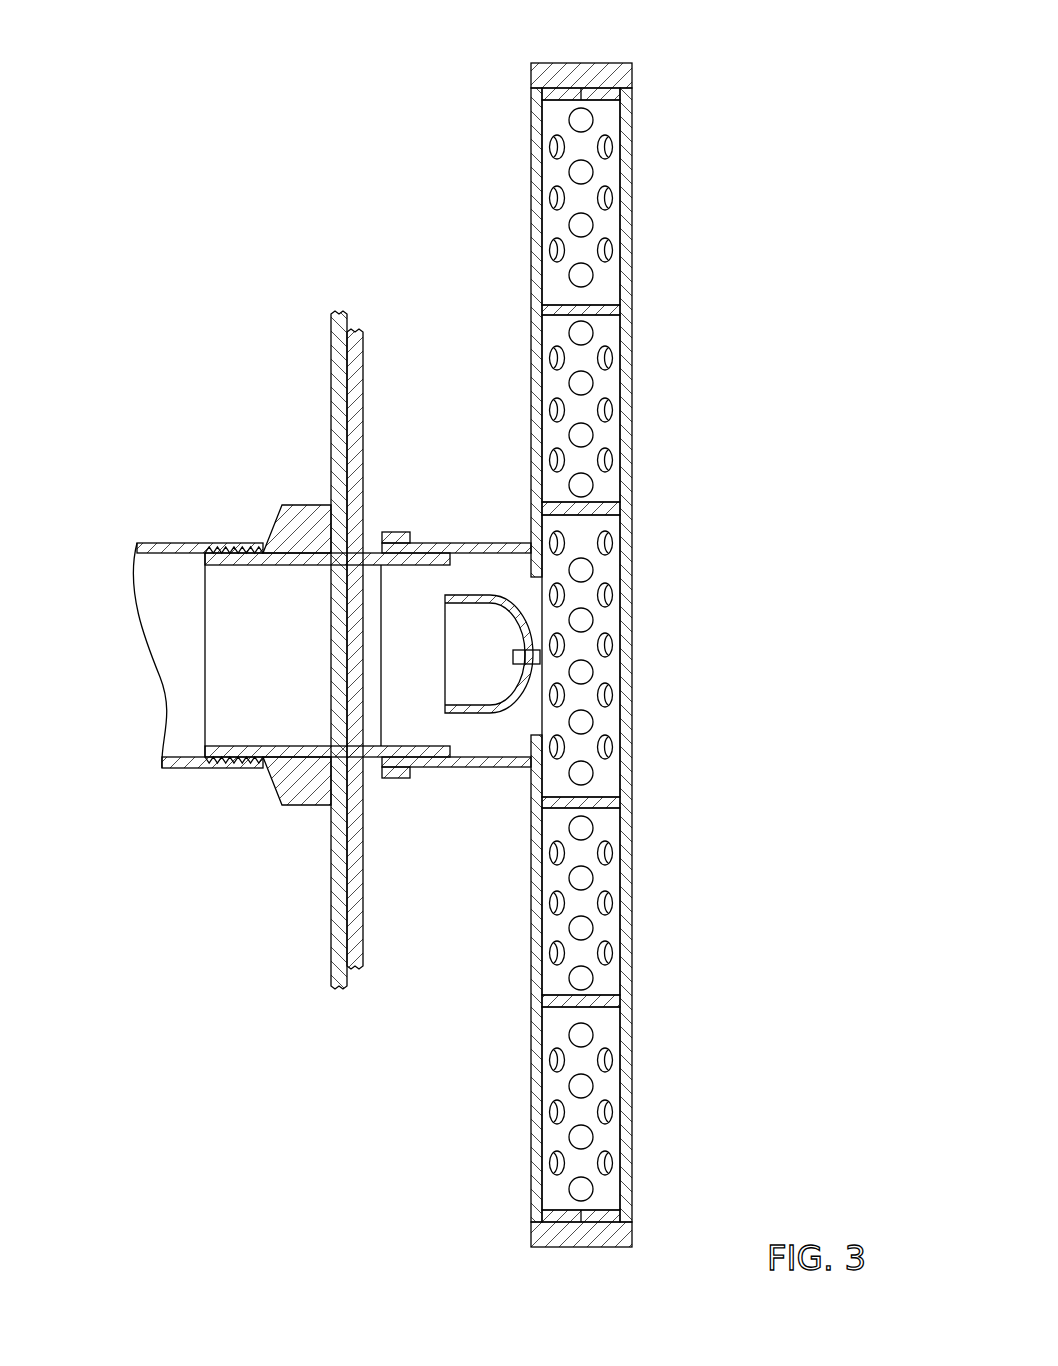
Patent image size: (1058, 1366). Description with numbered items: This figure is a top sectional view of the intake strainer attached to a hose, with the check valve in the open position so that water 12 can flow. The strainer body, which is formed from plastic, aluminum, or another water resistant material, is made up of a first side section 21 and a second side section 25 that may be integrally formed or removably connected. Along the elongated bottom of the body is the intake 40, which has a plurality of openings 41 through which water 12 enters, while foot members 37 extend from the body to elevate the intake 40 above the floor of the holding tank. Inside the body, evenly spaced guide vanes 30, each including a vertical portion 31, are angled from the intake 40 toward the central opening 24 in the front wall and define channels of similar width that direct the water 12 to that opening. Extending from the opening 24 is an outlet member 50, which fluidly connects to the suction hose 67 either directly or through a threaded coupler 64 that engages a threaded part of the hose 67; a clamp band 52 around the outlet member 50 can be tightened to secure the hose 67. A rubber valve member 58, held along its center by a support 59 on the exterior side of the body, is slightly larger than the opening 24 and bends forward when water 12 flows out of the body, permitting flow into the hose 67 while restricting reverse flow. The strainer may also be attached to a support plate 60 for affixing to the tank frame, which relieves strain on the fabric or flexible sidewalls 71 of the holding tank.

The water 12 is at (327, 658).
The first side section 21 is at (531, 382).
The central opening 24 is at (533, 578).
The second side section 25 is at (631, 348).
The guide vanes 30 is at (606, 303).
The vertical portion 31 is at (558, 313).
The foot members 37 is at (590, 75).
The intake 40 is at (603, 620).
The openings 41 is at (606, 582).
The outlet member 50 is at (440, 758).
The band 52 is at (400, 532).
The valve member 58 is at (482, 709).
The support 59 is at (500, 718).
The support plate 60 is at (337, 372).
The threaded coupler 64 is at (287, 530).
The suction hose 67 is at (163, 543).
The sidewalls 71 is at (358, 392).